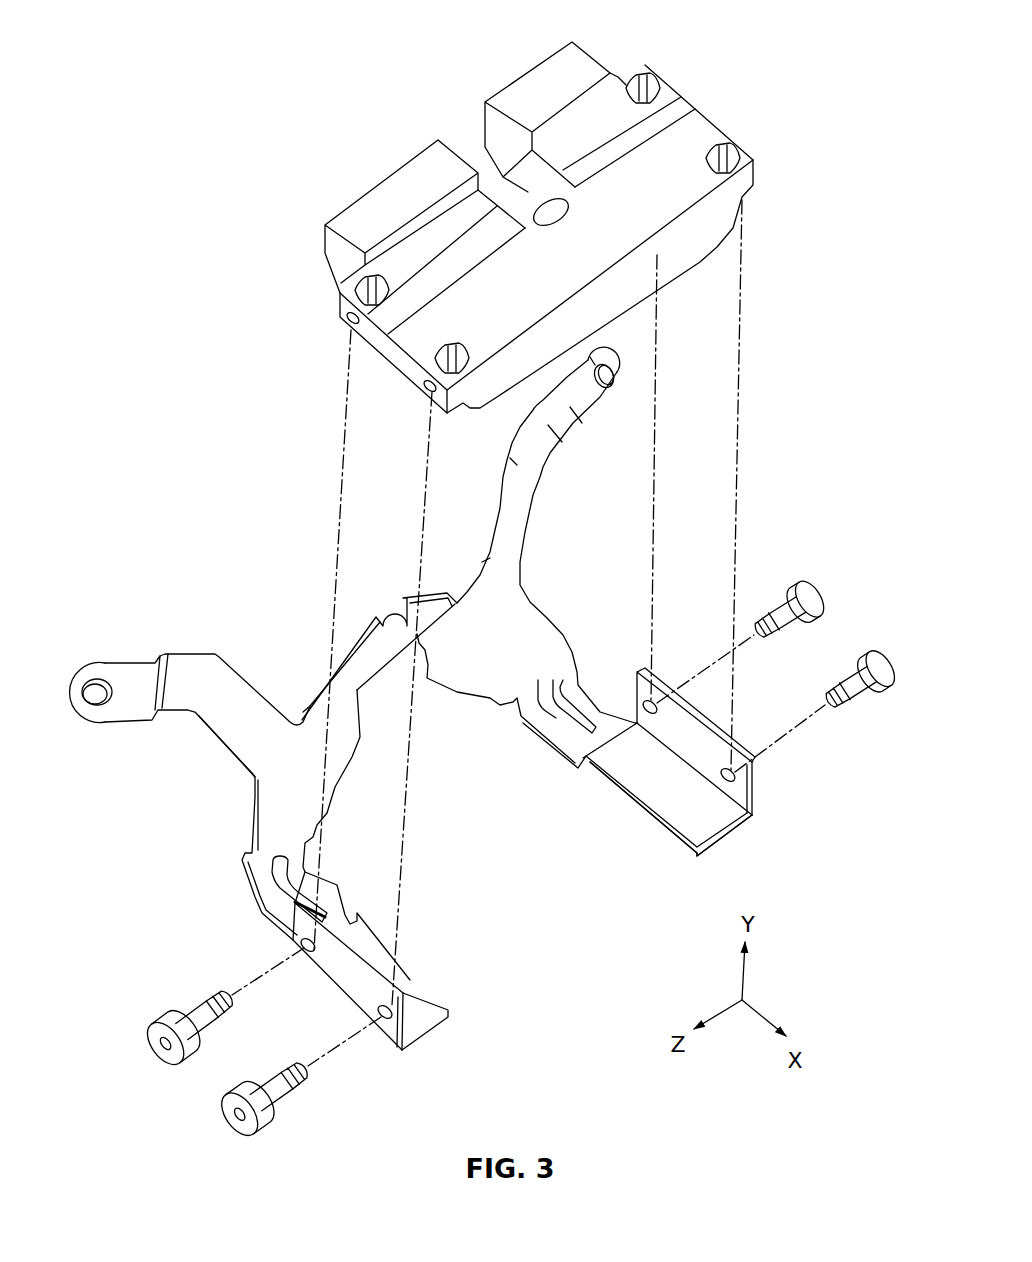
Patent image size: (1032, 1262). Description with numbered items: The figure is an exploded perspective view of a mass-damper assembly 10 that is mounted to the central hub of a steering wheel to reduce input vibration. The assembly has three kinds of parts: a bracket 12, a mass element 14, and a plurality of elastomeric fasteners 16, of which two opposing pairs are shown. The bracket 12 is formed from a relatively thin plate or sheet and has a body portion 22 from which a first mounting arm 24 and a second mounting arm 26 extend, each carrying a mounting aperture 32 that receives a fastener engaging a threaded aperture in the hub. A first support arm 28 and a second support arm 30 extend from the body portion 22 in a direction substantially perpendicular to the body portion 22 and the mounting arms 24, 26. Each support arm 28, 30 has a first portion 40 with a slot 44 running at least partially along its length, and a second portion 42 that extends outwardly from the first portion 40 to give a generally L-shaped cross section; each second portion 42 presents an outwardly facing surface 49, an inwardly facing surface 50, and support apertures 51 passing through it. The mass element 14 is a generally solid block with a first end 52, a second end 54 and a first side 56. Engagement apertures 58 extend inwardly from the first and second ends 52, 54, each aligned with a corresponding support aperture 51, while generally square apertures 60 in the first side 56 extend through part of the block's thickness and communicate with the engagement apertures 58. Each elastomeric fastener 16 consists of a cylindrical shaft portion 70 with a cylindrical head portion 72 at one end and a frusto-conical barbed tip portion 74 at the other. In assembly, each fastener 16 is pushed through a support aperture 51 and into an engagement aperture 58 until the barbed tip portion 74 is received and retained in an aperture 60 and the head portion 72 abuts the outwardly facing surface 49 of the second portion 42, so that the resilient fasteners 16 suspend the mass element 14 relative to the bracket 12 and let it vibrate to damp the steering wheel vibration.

The mass-damper assembly 10 is at (238, 122).
The bracket 12 is at (370, 620).
The mass element 14 is at (402, 160).
The elastomeric fasteners 16 is at (806, 580).
The body portion 22 is at (487, 648).
The first mounting arm 24 is at (198, 710).
The second mounting arm 26 is at (530, 488).
The first support arm 28 is at (338, 884).
The second support arm 30 is at (596, 777).
The mounting aperture 32 is at (610, 385).
The first portion 40 is at (678, 808).
The second portion 42 is at (752, 800).
The slot 44 is at (552, 672).
The outwardly facing surface 49 is at (329, 986).
The inwardly facing surface 50 is at (674, 753).
The support aperture 51 is at (652, 700).
The first end 52 is at (410, 360).
The second end 54 is at (704, 110).
The first side 56 is at (537, 277).
The engagement aperture 58 is at (348, 316).
The apertures 60 is at (651, 80).
The shaft portion 70 is at (781, 622).
The head portion 72 is at (816, 600).
The barbed tip portion 74 is at (767, 644).